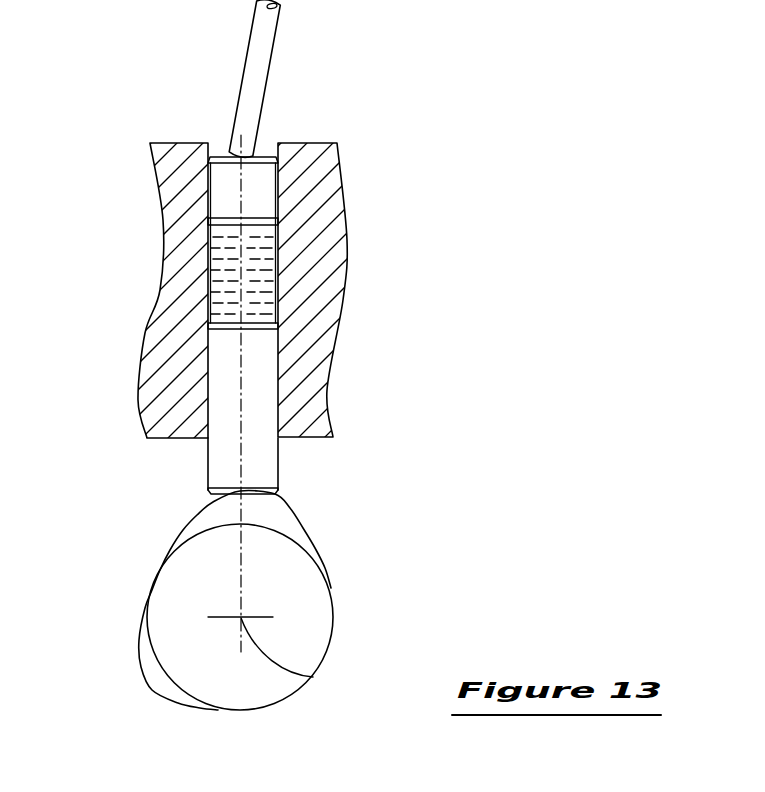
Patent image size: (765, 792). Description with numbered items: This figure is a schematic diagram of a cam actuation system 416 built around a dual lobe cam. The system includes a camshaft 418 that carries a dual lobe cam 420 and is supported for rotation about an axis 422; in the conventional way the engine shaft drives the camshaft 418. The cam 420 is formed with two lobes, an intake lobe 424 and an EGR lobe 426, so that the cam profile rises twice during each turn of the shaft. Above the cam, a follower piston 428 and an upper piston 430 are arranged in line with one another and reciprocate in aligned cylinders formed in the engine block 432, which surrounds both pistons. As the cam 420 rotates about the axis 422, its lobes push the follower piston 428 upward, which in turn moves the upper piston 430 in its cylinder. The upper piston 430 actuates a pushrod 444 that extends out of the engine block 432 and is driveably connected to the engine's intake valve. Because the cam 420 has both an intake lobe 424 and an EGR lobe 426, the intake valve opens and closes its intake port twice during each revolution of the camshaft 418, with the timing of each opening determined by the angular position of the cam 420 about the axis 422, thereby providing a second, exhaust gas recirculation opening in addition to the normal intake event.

The pushrod 444 is at (257, 68).
The upper piston 430 is at (263, 194).
The engine block 432 is at (160, 325).
The cam actuation system 416 is at (330, 454).
The follower piston 428 is at (217, 462).
The intake lobe 424 is at (282, 524).
The dual lobe cam 420 is at (178, 528).
The camshaft 418 is at (312, 608).
The axis 422 is at (313, 677).
The EGR lobe 426 is at (160, 675).